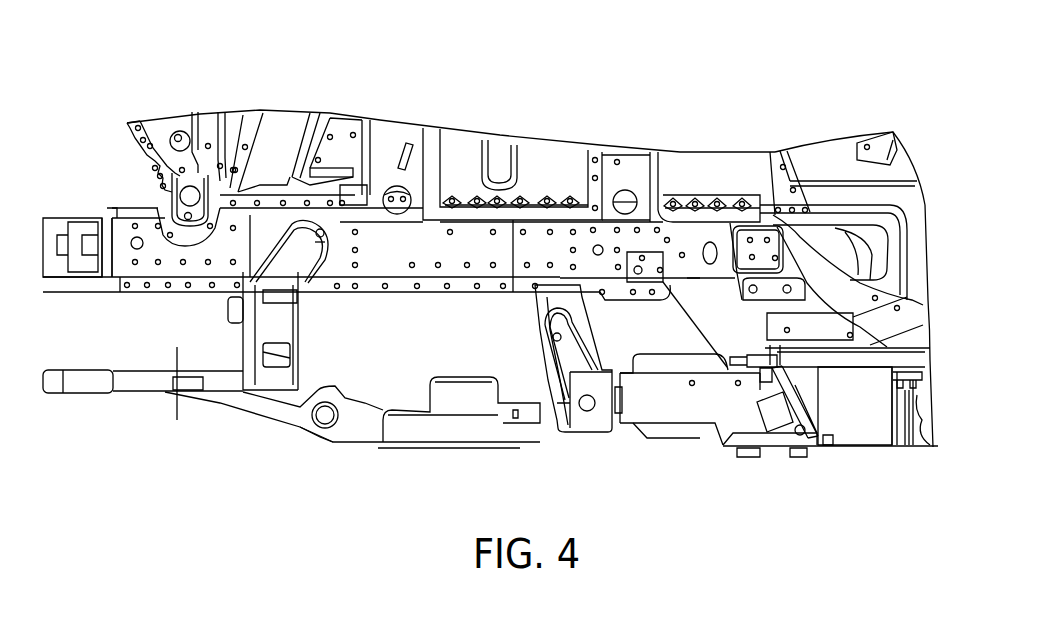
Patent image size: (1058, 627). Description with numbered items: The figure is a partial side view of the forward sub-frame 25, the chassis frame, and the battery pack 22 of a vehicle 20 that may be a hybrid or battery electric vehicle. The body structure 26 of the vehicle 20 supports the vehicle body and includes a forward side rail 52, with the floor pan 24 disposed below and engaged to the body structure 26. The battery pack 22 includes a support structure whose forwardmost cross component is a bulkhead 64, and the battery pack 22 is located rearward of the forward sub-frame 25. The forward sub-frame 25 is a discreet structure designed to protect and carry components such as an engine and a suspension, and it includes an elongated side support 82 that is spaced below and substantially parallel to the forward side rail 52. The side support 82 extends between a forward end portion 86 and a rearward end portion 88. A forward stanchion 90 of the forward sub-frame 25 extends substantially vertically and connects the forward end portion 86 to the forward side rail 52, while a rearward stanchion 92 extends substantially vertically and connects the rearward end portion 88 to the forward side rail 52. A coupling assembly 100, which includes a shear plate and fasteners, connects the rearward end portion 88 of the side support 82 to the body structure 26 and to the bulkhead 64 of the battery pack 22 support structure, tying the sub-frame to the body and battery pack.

The vehicle 20 is at (740, 102).
The battery pack 22 is at (867, 465).
The floor pan 24 is at (923, 300).
The forward sub-frame 25 is at (270, 435).
The body structure 26 is at (368, 300).
The forward side rail 52 is at (433, 295).
The bulkhead 64 is at (810, 450).
The side support 82 is at (437, 446).
The forward end portion 86 is at (228, 403).
The rearward end portion 88 is at (687, 445).
The forward stanchion 90 is at (243, 343).
The rearward stanchion 92 is at (595, 338).
The coupling assembly 100 is at (766, 475).